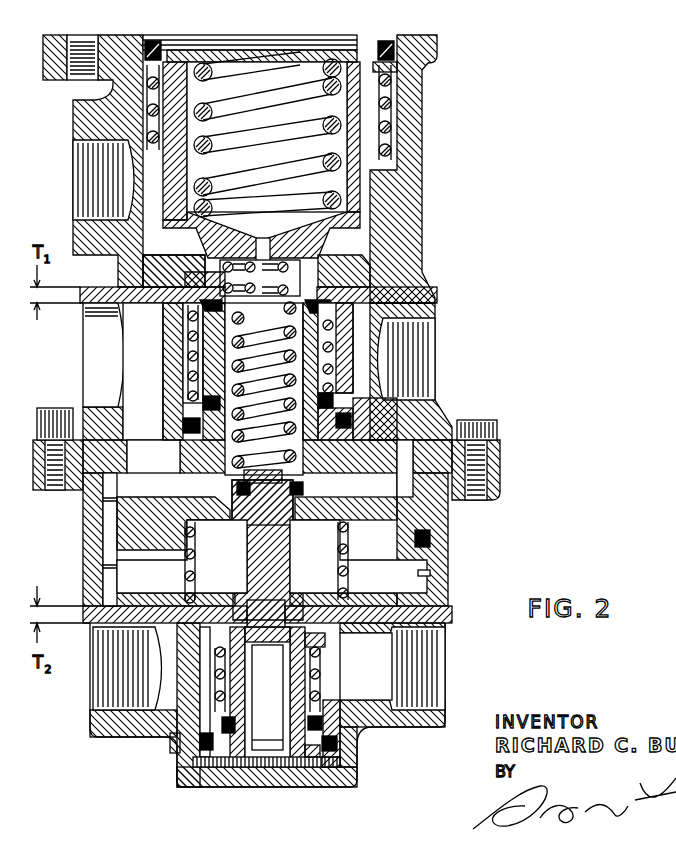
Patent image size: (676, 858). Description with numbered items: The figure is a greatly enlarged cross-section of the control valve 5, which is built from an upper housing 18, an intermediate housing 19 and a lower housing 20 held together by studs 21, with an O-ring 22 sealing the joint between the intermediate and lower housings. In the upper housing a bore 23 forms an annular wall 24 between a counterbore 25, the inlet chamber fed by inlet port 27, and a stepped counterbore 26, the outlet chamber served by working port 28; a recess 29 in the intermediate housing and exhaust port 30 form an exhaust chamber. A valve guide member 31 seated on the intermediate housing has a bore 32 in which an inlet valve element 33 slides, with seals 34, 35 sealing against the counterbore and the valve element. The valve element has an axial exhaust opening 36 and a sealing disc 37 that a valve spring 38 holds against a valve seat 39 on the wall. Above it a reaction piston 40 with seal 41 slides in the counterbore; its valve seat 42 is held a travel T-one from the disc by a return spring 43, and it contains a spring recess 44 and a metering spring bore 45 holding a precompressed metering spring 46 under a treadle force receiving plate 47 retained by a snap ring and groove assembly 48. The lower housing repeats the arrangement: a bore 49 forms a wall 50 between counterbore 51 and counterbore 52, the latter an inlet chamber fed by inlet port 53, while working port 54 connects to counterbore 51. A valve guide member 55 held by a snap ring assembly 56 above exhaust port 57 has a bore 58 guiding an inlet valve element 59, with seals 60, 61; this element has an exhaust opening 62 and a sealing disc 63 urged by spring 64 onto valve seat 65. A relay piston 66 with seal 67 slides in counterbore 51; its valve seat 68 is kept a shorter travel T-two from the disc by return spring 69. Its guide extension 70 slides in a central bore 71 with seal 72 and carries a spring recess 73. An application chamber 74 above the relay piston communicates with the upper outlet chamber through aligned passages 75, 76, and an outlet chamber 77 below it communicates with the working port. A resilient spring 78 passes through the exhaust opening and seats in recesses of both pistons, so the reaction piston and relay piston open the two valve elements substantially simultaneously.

The control valve 5 is at (481, 77).
The upper housing 18 is at (410, 175).
The intermediate housing 19 is at (500, 460).
The lower housing 20 is at (440, 597).
The studs 21 is at (60, 407).
The sealing member or O-ring 22 is at (103, 483).
The bore 23 is at (318, 297).
The annular wall or partition 24 is at (165, 258).
The counterbore 25 is at (187, 325).
The stepped counterbore 26 is at (380, 143).
The inlet port 27 is at (420, 322).
The outlet or working port 28 is at (80, 148).
The recess 29 is at (178, 470).
The exhaust port 30 is at (90, 318).
The valve guide member 31 is at (185, 380).
The bore 32 is at (312, 370).
The inlet valve element 33 is at (333, 345).
The seal 34 is at (195, 430).
The seal 35 is at (205, 406).
The axial bore or exhaust opening 36 is at (303, 330).
The annular resilient sealing member or disc 37 is at (335, 308).
The valve spring 38 is at (203, 352).
The valve seat 39 is at (203, 287).
The reaction piston or valve control member 40 is at (252, 157).
The seal 41 is at (385, 45).
The valve seat 42 is at (245, 262).
The return spring 43 is at (380, 100).
The spring receiving recess 44 is at (285, 262).
The metering spring bore 45 is at (345, 107).
The metering spring 46 is at (201, 66).
The retainer or treadle force receiving plate 47 is at (255, 57).
The snap ring and groove assembly 48 is at (350, 48).
The bore 49 is at (340, 580).
The annular wall or partition 50 is at (403, 595).
The counterbore 51 is at (430, 573).
The counterbore 52 is at (203, 679).
The inlet port 53 is at (442, 635).
The outlet or working port 54 is at (100, 709).
The valve guide member 55 is at (312, 752).
The snap ring and groove assembly 56 is at (328, 767).
The exhaust port 57 is at (210, 770).
The bore 58 is at (317, 696).
The inlet valve element 59 is at (258, 695).
The seal 60 is at (355, 743).
The seal 61 is at (322, 724).
The axial bore or exhaust opening 62 is at (292, 718).
The annular resilient sealing member or disc 63 is at (284, 642).
The spring 64 is at (315, 660).
The valve seat 65 is at (247, 583).
The relay piston or valve control member 66 is at (258, 563).
The seal 67 is at (432, 537).
The valve seat 68 is at (293, 600).
The return spring 69 is at (187, 583).
The guide extension 70 is at (236, 497).
The bore 71 is at (297, 517).
The seal 72 is at (303, 489).
The spring receiving recess 73 is at (243, 503).
The expansible application or control chamber 74 is at (118, 510).
The passage 75 is at (392, 460).
The passage 76 is at (387, 427).
The outlet or working chamber 77 is at (113, 580).
The resilient force transmitting member or spring 78 is at (264, 388).